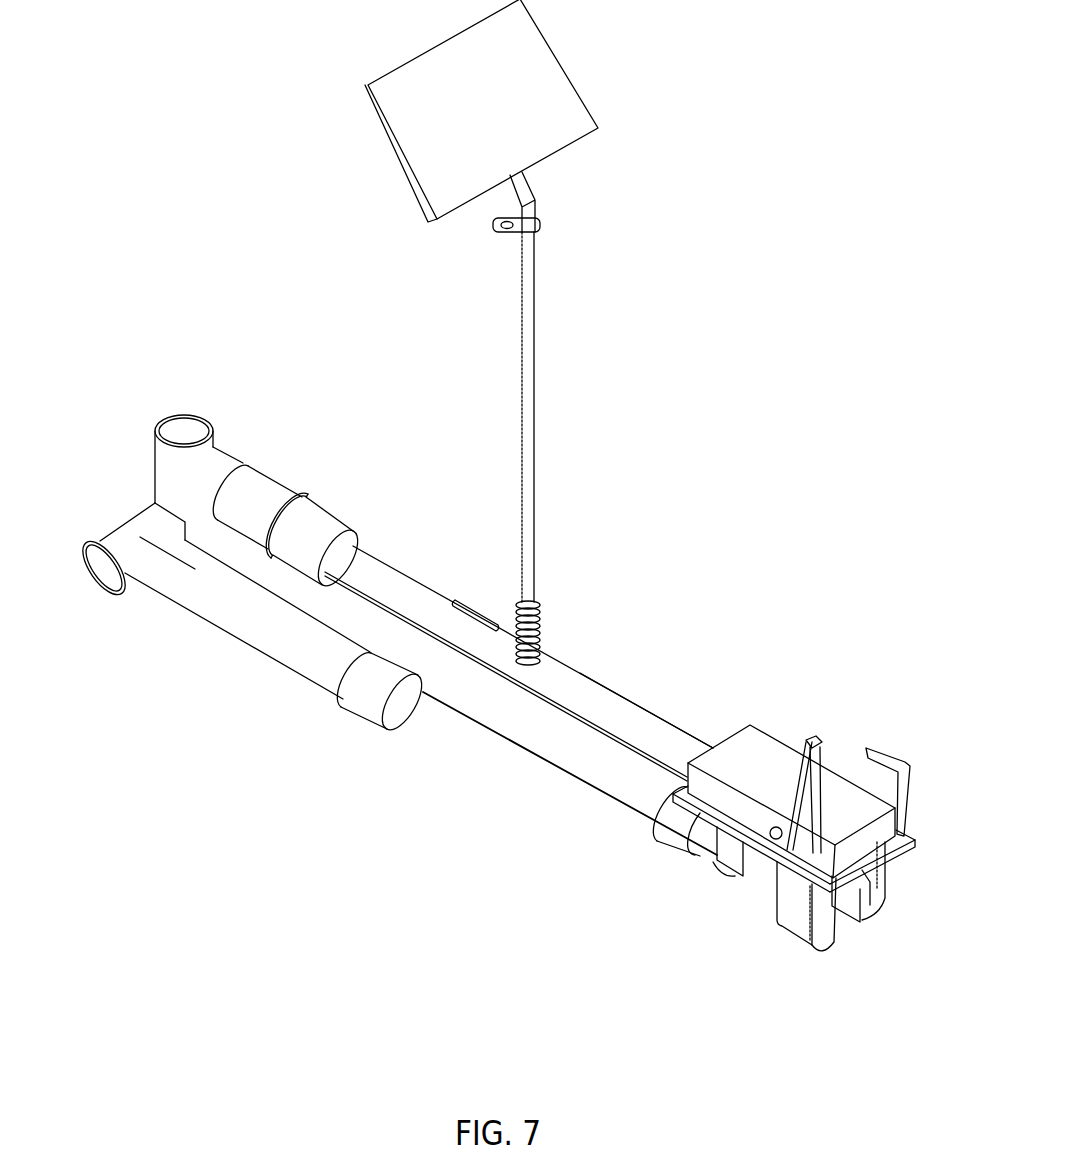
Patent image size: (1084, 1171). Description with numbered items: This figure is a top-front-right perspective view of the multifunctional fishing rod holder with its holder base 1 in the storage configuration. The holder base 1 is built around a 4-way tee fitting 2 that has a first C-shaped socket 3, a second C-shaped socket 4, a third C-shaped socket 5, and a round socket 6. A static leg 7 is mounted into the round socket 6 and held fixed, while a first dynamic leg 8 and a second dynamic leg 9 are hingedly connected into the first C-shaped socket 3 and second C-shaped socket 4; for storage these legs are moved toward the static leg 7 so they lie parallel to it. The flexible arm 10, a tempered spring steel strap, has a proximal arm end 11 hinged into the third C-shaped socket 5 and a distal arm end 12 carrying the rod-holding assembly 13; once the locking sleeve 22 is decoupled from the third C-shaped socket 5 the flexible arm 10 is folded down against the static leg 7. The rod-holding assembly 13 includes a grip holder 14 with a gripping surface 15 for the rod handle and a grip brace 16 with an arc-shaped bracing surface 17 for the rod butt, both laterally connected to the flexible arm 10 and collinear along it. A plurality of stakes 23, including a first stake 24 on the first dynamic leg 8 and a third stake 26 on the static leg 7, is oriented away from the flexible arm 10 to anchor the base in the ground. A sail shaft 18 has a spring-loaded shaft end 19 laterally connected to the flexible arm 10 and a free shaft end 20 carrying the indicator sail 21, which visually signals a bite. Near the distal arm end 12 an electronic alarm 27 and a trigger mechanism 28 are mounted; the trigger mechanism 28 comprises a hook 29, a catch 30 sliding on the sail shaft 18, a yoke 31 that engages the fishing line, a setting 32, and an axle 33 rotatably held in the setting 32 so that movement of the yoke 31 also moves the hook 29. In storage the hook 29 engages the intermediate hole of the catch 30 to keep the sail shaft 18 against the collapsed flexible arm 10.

The holder base 1 is at (321, 799).
The 4-way tee fitting 2 is at (67, 448).
The first C-shaped socket 3 is at (105, 540).
The second C-shaped socket 4 is at (262, 457).
The third C-shaped socket 5 is at (158, 455).
The round socket 6 is at (220, 555).
The static leg 7 is at (533, 747).
The first dynamic leg 8 is at (222, 625).
The second dynamic leg 9 is at (397, 558).
The flexible arm 10 is at (605, 695).
The proximal arm end 11 is at (228, 460).
The distal arm end 12 is at (911, 842).
The rod-holding assembly 13 is at (732, 1027).
The grip holder 14 is at (798, 930).
The gripping surface 15 is at (858, 917).
The grip brace 16 is at (727, 862).
The bracing surface 17 is at (763, 863).
The sail shaft 18 is at (537, 393).
The spring-loaded shaft end 19 is at (538, 645).
The free shaft end 20 is at (518, 177).
The indicator sail 21 is at (557, 63).
The locking sleeve 22 is at (282, 493).
The plurality of stakes 23 is at (480, 775).
The first stake 24 is at (352, 706).
The third stake 26 is at (652, 822).
The electronic alarm 27 is at (760, 728).
The trigger mechanism 28 is at (924, 693).
The hook 29 is at (880, 748).
The catch 30 is at (505, 237).
The yoke 31 is at (800, 777).
The setting 32 is at (868, 832).
The axle 33 is at (905, 832).